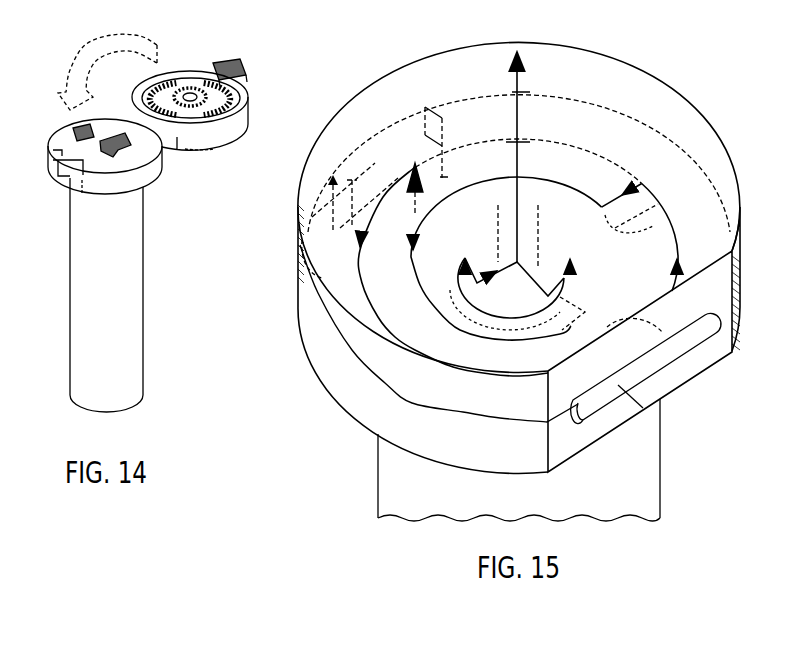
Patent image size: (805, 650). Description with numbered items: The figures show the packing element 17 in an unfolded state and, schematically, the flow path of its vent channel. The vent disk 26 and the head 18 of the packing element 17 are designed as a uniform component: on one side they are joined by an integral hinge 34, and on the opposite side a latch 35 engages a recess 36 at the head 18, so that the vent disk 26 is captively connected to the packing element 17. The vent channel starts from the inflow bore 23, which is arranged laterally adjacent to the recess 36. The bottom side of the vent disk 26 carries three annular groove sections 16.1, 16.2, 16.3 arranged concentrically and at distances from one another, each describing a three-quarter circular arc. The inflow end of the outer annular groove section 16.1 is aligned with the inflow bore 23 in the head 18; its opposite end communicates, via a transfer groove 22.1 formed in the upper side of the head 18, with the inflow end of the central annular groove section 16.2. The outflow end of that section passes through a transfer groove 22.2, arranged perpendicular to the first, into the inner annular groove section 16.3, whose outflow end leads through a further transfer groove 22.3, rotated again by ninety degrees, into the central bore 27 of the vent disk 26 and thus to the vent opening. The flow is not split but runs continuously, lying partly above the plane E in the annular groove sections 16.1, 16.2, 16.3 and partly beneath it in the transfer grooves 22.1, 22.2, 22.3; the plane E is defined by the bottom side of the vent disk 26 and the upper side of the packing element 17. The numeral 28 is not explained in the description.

In FIG. 14, the outer annular groove section 16.1 is at (232, 145).
In FIG. 15, the outer annular groove section 16.1 is at (338, 270).
In FIG. 14, the central annular groove section 16.2 is at (249, 95).
In FIG. 15, the central annular groove section 16.2 is at (425, 298).
In FIG. 14, the inner annular groove section 16.3 is at (180, 84).
In FIG. 15, the inner annular groove section 16.3 is at (563, 210).
In FIG. 14, the packing element 17 is at (64, 324).
In FIG. 15, the packing element 17 is at (665, 483).
In FIG. 15, the head 18 is at (742, 325).
In FIG. 14, the transfer groove 22.1 is at (70, 127).
In FIG. 15, the transfer groove 22.1 is at (663, 333).
In FIG. 14, the transfer groove 22.2 is at (157, 174).
In FIG. 15, the transfer groove 22.2 is at (636, 182).
In FIG. 14, the transfer groove 22.3 is at (82, 193).
In FIG. 15, the transfer groove 22.3 is at (480, 297).
In FIG. 14, the inflow bore 23 is at (56, 149).
In FIG. 15, the inflow bore 23 is at (403, 160).
In FIG. 15, the vent disk 26 is at (746, 193).
In FIG. 14, the central bore 27 is at (191, 90).
In FIG. 15, the central bore 27 is at (522, 46).
In FIG. 14, the ring underside 28 is at (203, 150).
In FIG. 14, the integral hinge 34 is at (131, 117).
In FIG. 15, the integral hinge 34 is at (661, 409).
In FIG. 14, the latch 35 is at (232, 60).
In FIG. 14, the recess 36 is at (62, 172).
In FIG. 15, the recess 36 is at (428, 120).
In FIG. 15, the plane E is at (610, 115).